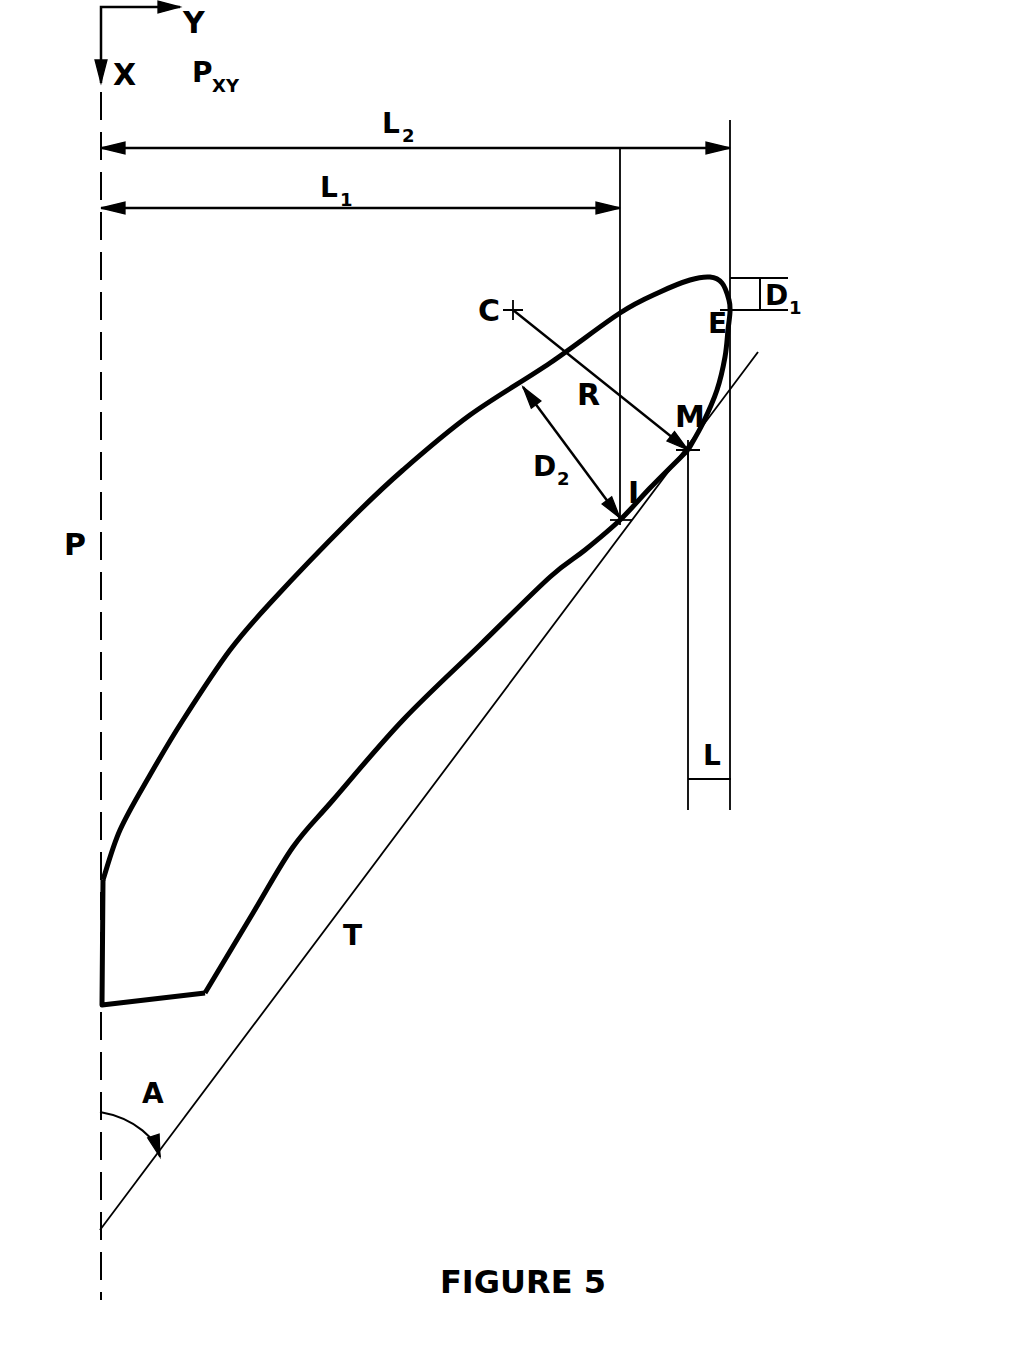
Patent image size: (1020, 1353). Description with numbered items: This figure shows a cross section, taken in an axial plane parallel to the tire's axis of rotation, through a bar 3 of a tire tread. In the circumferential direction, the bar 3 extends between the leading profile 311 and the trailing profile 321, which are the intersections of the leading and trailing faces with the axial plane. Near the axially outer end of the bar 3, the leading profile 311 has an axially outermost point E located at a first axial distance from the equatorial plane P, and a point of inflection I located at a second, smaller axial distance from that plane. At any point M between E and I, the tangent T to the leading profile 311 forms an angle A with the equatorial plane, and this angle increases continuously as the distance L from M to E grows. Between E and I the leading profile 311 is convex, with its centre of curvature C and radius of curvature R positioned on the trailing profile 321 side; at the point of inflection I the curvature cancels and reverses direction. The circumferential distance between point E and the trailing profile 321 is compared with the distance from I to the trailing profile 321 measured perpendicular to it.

The bar 3 is at (416, 641).
The trailing profile 321 is at (403, 470).
The leading profile 311 is at (413, 707).